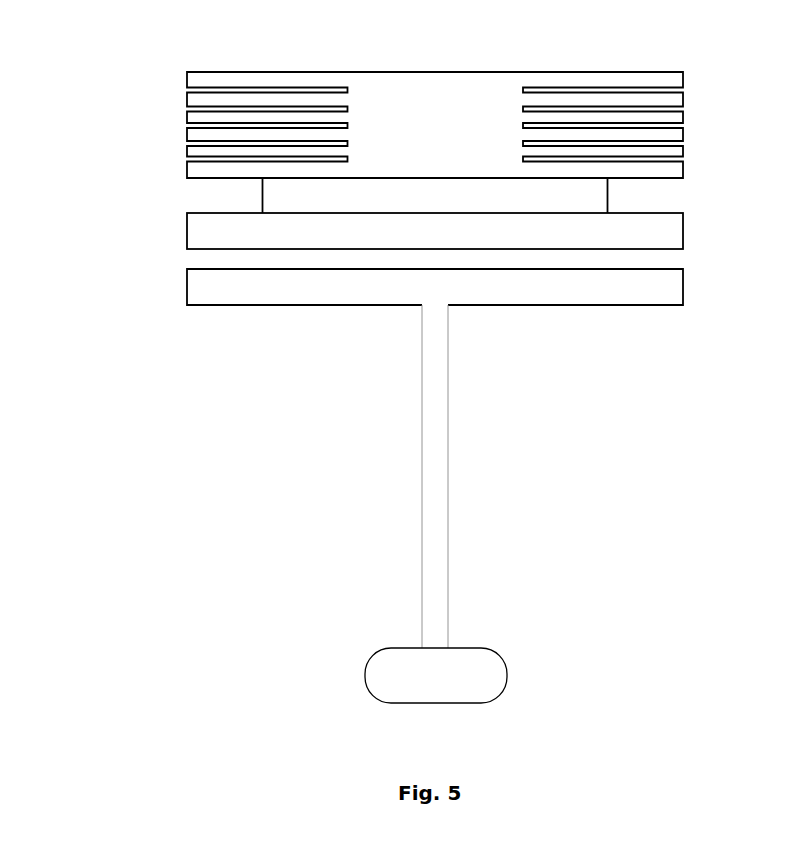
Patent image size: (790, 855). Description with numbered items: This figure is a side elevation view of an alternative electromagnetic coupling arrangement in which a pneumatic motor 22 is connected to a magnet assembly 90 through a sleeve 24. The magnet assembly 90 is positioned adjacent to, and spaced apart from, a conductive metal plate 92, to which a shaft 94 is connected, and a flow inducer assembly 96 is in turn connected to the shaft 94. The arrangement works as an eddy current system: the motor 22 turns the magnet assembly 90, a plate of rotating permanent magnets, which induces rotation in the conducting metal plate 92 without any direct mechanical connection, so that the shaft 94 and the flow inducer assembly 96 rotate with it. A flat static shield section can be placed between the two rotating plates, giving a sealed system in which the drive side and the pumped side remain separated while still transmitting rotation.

The pneumatic motor 22 is at (388, 91).
The sleeve 24 is at (270, 191).
The magnet assembly 90 is at (197, 232).
The conductive metal plate 92 is at (197, 284).
The shaft 94 is at (435, 474).
The flow inducer assembly 96 is at (386, 680).